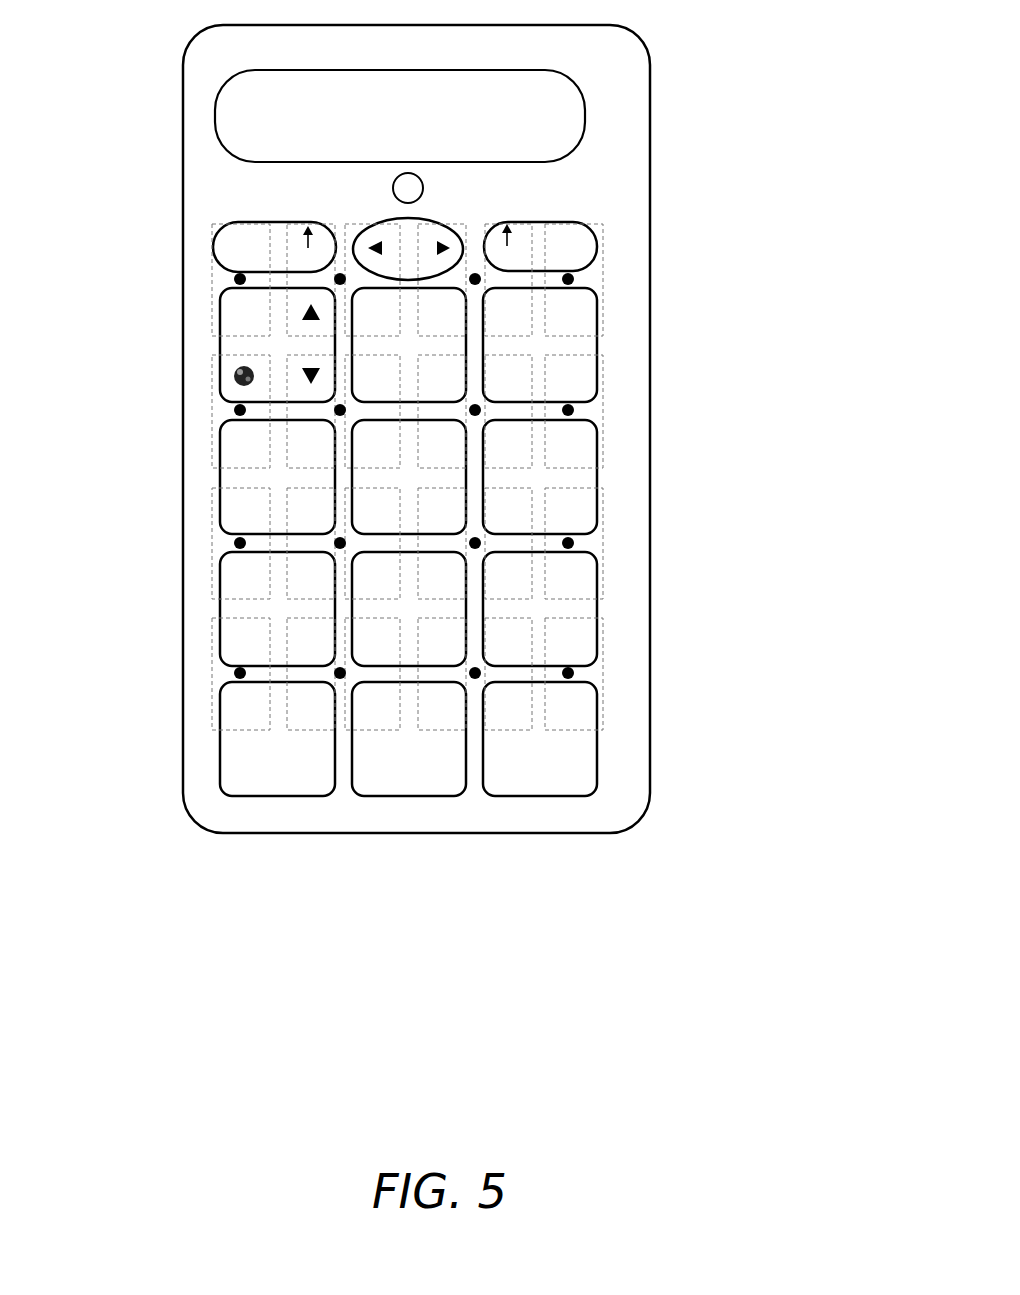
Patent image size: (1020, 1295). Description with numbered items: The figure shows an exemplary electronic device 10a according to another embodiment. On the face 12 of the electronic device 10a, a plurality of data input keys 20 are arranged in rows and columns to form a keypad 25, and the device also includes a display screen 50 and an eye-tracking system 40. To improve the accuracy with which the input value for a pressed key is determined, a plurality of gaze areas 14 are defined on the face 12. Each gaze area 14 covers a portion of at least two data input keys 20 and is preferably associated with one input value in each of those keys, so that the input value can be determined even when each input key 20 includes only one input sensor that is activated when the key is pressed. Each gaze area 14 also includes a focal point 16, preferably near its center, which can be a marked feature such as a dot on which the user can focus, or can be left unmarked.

The electronic device 10a is at (380, 551).
The face 12 is at (590, 195).
The display screen 50 is at (213, 124).
The eye-tracking system 40 is at (393, 187).
The keypad 25 is at (469, 647).
The data input key 20 is at (408, 616).
The gaze area 14 is at (407, 621).
The focal point 16 is at (404, 675).